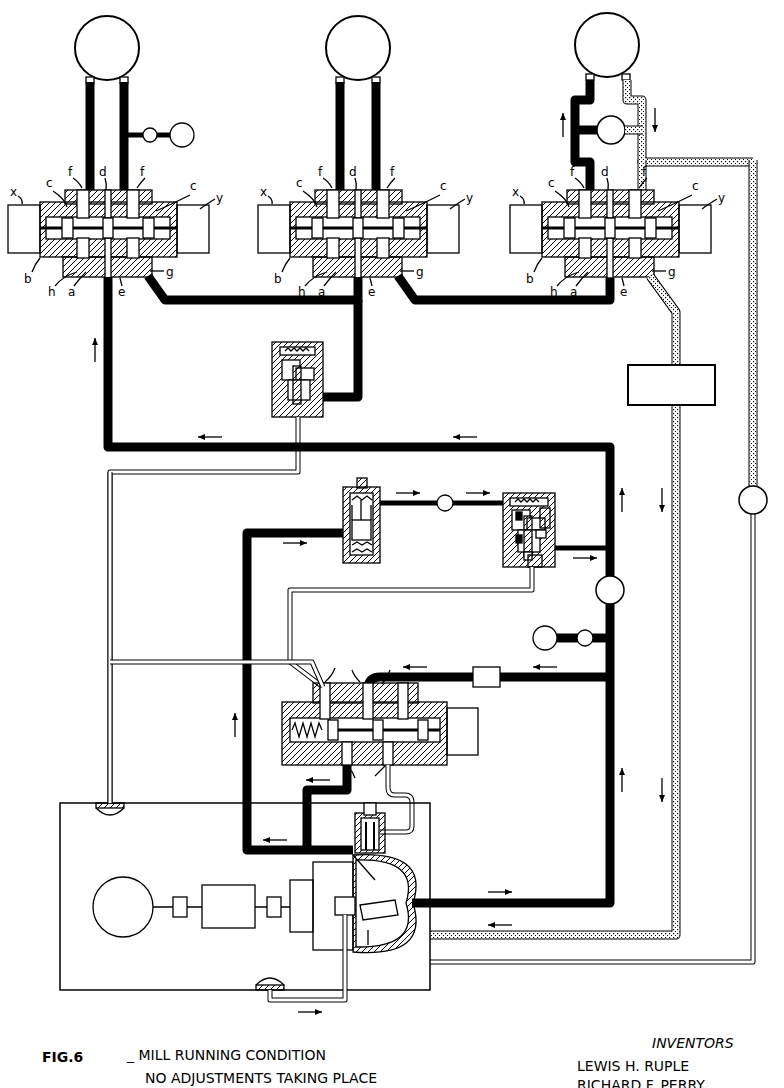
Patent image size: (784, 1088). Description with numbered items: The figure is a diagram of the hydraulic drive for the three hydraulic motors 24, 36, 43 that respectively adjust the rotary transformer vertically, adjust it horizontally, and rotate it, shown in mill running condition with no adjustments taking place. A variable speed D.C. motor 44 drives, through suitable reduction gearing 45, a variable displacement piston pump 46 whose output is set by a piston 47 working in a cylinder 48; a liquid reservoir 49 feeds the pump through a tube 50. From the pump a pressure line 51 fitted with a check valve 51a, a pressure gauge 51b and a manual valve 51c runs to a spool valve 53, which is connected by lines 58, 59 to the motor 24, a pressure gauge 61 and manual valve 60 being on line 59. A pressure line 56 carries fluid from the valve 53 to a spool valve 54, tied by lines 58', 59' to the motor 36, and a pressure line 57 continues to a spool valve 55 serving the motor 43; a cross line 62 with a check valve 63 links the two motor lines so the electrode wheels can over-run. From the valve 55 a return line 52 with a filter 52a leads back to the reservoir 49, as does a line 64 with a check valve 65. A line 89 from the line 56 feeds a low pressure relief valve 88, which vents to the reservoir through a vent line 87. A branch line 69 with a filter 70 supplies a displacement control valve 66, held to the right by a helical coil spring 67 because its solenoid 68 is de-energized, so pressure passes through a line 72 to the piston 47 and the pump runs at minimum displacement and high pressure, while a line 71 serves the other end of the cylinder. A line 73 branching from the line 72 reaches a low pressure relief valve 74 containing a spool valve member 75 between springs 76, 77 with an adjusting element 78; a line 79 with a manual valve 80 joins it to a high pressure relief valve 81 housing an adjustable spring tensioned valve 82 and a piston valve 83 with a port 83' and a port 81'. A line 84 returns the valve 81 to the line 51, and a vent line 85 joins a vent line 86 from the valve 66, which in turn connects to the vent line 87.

The hydraulic motor 24 is at (116, 55).
The hydraulic motor 36 is at (367, 55).
The hydraulic motor 43 is at (616, 52).
The line 58 is at (73, 136).
The line 59 is at (143, 136).
The manual valve 60 is at (151, 141).
The pressure gauge 61 is at (180, 139).
The spool valve 53 is at (161, 195).
The pressure line 56 is at (211, 306).
The line 58' is at (320, 136).
The line 59' is at (395, 136).
The spool valve 54 is at (410, 194).
The pressure line 57 is at (479, 302).
The cross line 62 is at (590, 124).
The check valve 63 is at (621, 142).
The spool valve 55 is at (663, 190).
The line 52 is at (681, 586).
The filter 52a is at (715, 355).
The line 64 is at (751, 454).
The check valve 65 is at (738, 500).
The low pressure relief valve 88 is at (272, 390).
The line 89 is at (364, 364).
The pressure line 51 is at (431, 440).
The check valve 51a is at (625, 590).
The pressure gauge 51b is at (562, 624).
The manual valve 51c is at (585, 630).
The line 73 is at (244, 626).
The low pressure relief valve 74 is at (380, 540).
The spool valve member 75 is at (352, 528).
The spring 76 is at (350, 556).
The spring 77 is at (343, 500).
The adjusting element 78 is at (365, 480).
The line 79 is at (430, 502).
The manual valve 80 is at (456, 490).
The adjustable spring tensioned valve 82 is at (539, 491).
The high pressure relief valve 81 is at (564, 512).
The port 81' is at (493, 520).
The spring tensioned piston valve 83 is at (562, 529).
The port 83' is at (503, 565).
The line 84 is at (547, 567).
The vent line 85 is at (458, 595).
The branch line 69 is at (544, 677).
The filter 70 is at (500, 684).
The displacement control valve 66 is at (438, 697).
The helical coil spring 67 is at (291, 728).
The solenoid 68 is at (478, 720).
The line 72 is at (303, 820).
The line 71 is at (414, 802).
The liquid reservoir 49 is at (190, 848).
The variable speed D.C. motor 44 is at (139, 941).
The gear reducer 45 is at (232, 920).
The variable displacement piston pump 46 is at (397, 954).
The cylinder 48 is at (358, 820).
The piston 47 is at (382, 827).
The tube 50 is at (348, 1000).
The vent line 87 is at (108, 624).
The vent line 86 is at (224, 670).